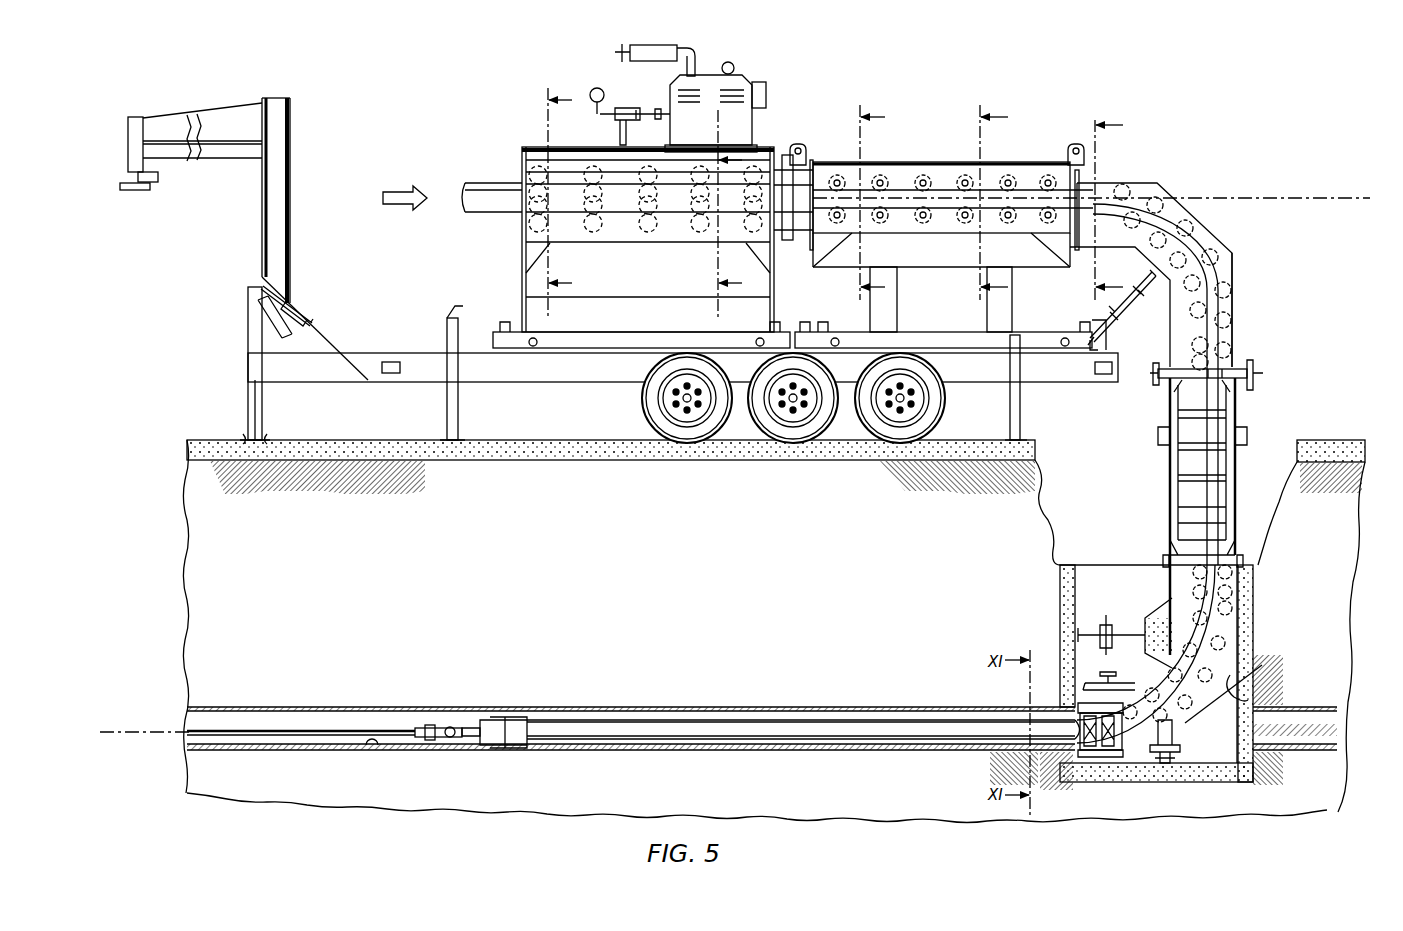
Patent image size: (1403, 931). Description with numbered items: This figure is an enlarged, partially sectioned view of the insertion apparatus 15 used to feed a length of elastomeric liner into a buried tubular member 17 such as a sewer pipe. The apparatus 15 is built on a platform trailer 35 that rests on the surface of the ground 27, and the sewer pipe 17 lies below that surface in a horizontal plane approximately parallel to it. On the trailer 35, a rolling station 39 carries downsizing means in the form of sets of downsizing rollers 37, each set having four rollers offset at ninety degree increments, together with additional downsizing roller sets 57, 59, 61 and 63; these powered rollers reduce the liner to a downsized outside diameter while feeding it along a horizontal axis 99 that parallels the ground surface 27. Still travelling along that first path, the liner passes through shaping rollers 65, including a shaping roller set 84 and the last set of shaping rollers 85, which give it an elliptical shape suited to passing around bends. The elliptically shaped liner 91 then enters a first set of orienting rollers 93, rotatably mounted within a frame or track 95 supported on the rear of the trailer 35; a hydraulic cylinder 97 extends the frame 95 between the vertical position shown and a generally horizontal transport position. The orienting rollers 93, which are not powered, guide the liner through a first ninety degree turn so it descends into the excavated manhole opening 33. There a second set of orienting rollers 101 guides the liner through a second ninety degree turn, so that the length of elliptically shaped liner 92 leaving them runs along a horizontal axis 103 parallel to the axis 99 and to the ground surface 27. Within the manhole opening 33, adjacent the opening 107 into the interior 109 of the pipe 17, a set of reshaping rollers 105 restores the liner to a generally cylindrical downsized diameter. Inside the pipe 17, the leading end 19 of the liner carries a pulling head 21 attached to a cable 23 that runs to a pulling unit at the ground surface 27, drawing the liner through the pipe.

The insertion apparatus 15 is at (975, 62).
The tubular member 17 is at (640, 708).
The leading end 19 is at (545, 735).
The pulling head 21 is at (473, 740).
The cable 23 is at (288, 737).
The surface of the ground 27 is at (345, 440).
The manhole opening 33 is at (1262, 665).
The platform trailer 35 is at (527, 368).
The downsizing rollers 37 is at (529, 180).
The rolling station 39 is at (528, 135).
The downsizing roller set 57 is at (588, 175).
The downsizing roller set 59 is at (643, 175).
The downsizing roller set 61 is at (690, 175).
The downsizing roller set 63 is at (756, 175).
The shaping rollers 65 is at (836, 160).
The upper drive rollers 84 is at (958, 166).
The last set of shaping rollers 85 is at (1043, 168).
The elliptically shaped liner 91 is at (1110, 190).
The length of elliptically shaped liner 92 is at (1150, 763).
The first set of orienting rollers 93 is at (1180, 200).
The frame or track 95 is at (1228, 248).
The hydraulic cylinder 97 is at (1135, 285).
The horizontal axis 99 is at (1260, 198).
The second set of orienting rollers 101 is at (1143, 605).
The horizontal axis 103 is at (112, 732).
The reshaping rollers 105 is at (1090, 757).
The opening 107 is at (1086, 758).
The interior 109 is at (368, 748).